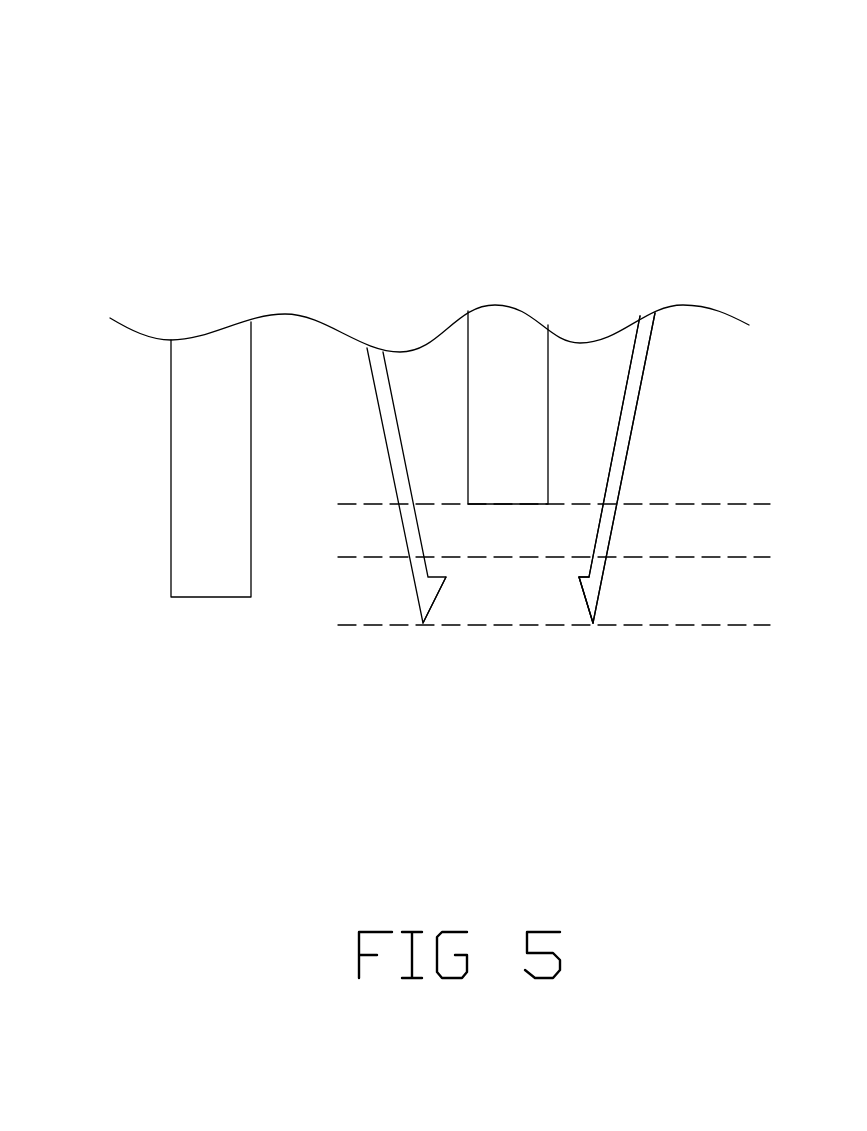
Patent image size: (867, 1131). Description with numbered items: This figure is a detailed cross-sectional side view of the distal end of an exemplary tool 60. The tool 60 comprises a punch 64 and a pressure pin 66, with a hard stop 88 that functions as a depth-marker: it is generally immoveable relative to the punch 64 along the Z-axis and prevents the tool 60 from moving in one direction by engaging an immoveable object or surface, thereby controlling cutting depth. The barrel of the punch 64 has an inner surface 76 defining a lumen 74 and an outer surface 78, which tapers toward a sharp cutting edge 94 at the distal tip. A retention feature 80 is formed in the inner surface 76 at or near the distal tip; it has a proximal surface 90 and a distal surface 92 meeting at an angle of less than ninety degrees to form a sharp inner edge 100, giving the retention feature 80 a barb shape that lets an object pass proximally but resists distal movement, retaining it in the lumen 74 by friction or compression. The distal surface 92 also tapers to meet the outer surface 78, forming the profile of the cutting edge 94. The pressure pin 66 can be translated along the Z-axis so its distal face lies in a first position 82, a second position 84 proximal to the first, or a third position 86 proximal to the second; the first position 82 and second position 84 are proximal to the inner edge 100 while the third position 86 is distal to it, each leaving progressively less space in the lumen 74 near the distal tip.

The tool 60 is at (643, 161).
The punch 64 is at (617, 468).
The pressure pin 66 is at (477, 373).
The lumen 74 is at (466, 609).
The inner surface 76 is at (640, 385).
The outer surface 78 is at (645, 364).
The retention feature 80 is at (425, 592).
The first position 82 is at (576, 504).
The second position 84 is at (576, 554).
The third position 86 is at (576, 625).
The hard stop 88 is at (181, 404).
The proximal surface 90 is at (577, 577).
The distal surface 92 is at (580, 607).
The cutting edge 94 is at (423, 625).
The inner edge 100 is at (575, 578).